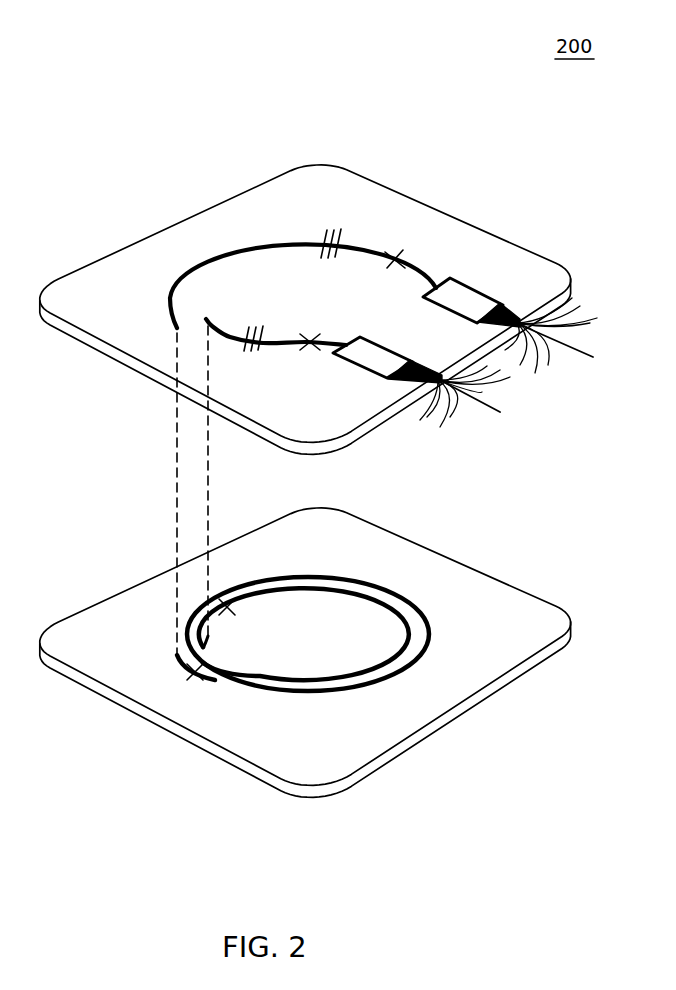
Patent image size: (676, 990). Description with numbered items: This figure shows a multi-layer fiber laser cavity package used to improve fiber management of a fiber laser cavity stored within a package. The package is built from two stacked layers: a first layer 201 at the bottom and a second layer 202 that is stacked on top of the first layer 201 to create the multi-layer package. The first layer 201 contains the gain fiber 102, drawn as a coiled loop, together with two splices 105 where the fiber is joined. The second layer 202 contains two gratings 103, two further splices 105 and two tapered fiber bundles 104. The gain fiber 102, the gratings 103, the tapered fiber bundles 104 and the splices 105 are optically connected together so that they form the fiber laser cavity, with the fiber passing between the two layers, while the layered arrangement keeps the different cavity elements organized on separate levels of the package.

The first layer 201 is at (157, 728).
The second layer 202 is at (157, 386).
The gain fiber 102 is at (271, 692).
The grating 103 is at (308, 289).
The tapered fiber bundle 104 is at (455, 316).
The splice 105 is at (372, 300).